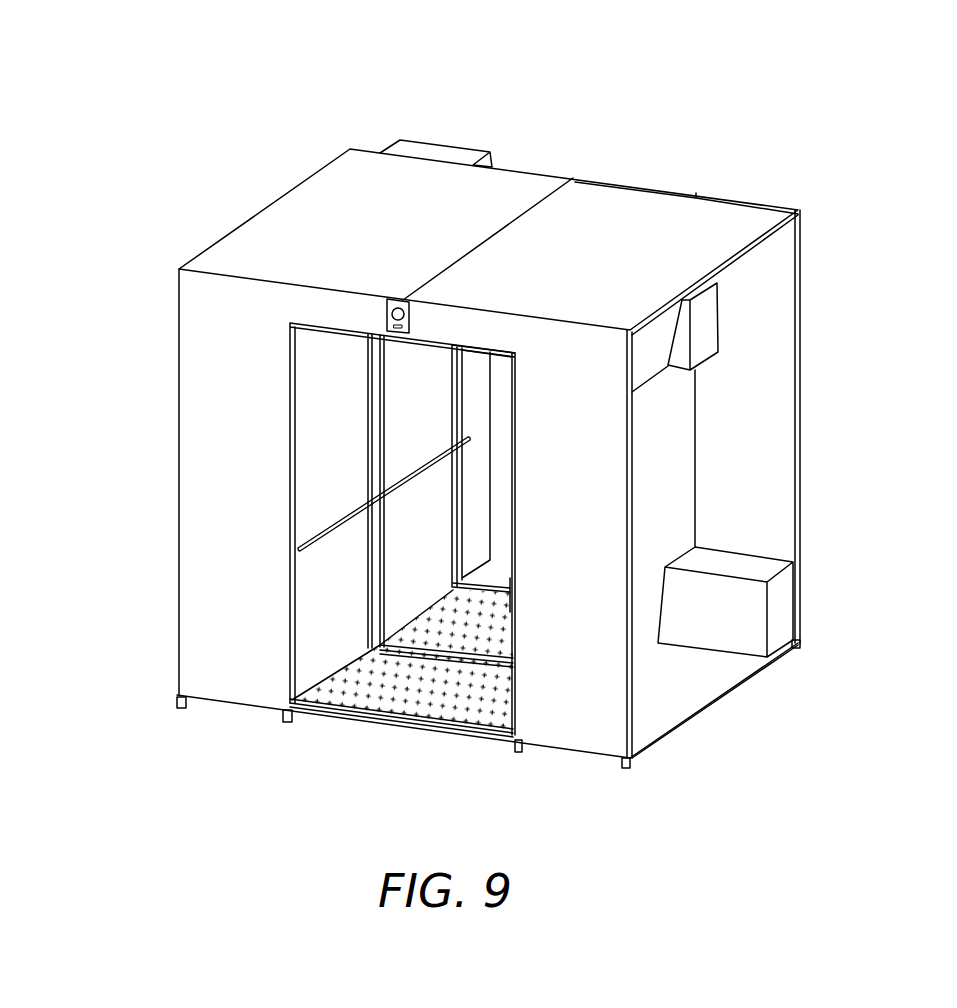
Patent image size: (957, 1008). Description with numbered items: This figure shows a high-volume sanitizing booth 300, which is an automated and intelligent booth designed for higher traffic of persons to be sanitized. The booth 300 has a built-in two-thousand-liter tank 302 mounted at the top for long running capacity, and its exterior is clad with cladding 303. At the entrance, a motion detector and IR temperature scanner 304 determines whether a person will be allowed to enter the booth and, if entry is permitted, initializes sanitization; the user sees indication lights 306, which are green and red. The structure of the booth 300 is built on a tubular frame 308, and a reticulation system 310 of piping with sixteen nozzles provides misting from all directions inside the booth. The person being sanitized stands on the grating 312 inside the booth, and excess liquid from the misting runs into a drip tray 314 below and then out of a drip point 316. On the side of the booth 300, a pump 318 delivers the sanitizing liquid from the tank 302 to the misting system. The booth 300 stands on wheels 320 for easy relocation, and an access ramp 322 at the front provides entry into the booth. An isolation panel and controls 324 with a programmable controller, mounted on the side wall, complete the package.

The booth 300 is at (648, 682).
The tank 302 is at (475, 137).
The cladding 303 is at (318, 205).
The motion detector and IR temperature scanner 304 is at (392, 300).
The indication lights 306 is at (409, 323).
The tubular frame 308 is at (465, 398).
The reticulation system 310 is at (372, 492).
The grating 312 is at (473, 610).
The drip tray 314 is at (493, 633).
The drip point 316 is at (640, 653).
The pump 318 is at (770, 618).
The wheels 320 is at (800, 642).
The access ramp 322 is at (485, 738).
The isolation panel and controls 324 is at (708, 313).